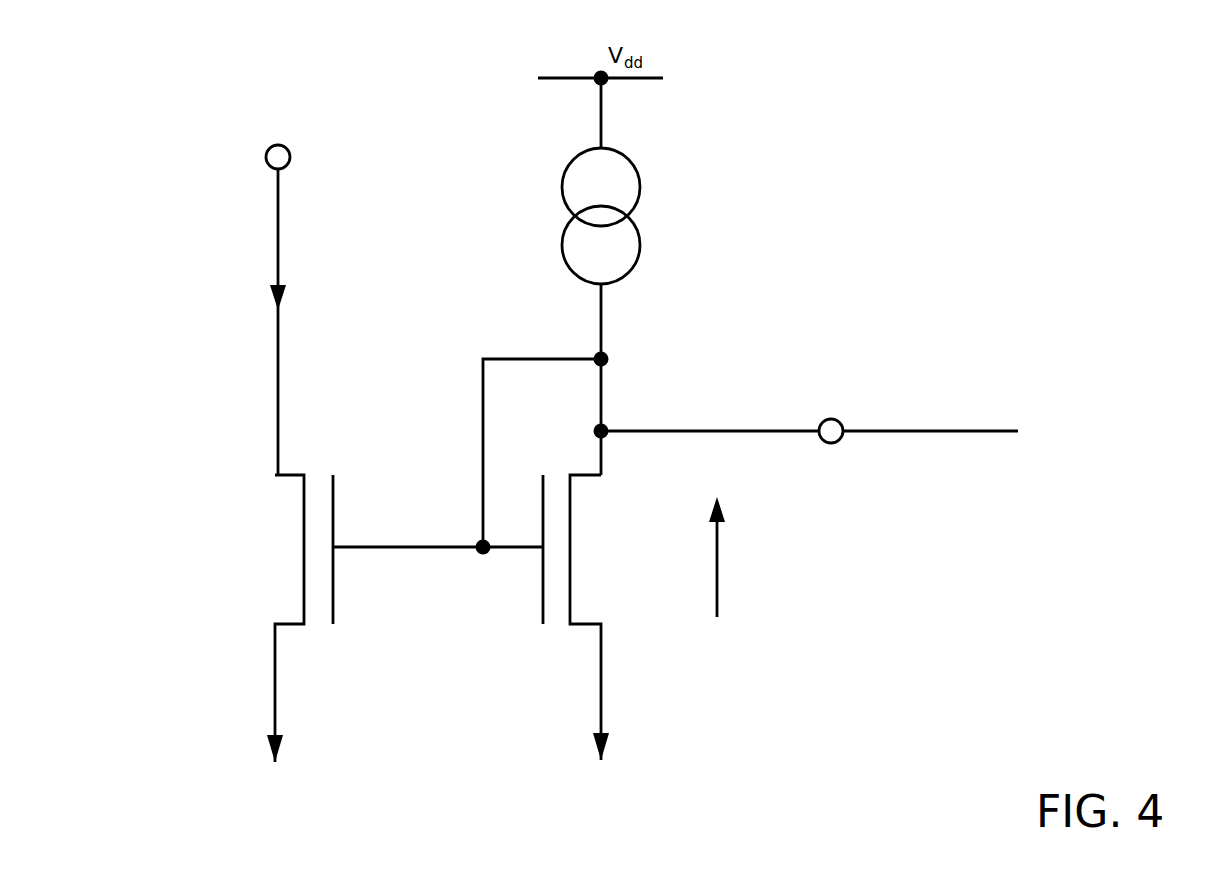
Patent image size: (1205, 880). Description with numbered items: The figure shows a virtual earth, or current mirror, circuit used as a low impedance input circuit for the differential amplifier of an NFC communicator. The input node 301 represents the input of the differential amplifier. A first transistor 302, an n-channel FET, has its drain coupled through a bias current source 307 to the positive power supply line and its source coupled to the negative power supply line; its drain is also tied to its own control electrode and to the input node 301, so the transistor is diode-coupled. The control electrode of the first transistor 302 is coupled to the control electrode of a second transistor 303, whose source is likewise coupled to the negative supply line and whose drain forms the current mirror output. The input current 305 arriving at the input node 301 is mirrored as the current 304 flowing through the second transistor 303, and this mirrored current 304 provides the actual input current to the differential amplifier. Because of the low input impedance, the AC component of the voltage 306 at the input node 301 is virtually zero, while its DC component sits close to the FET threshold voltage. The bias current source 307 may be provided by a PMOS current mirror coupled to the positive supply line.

The input node 301 is at (831, 419).
The first transistor 302 is at (544, 588).
The second transistor 303 is at (335, 590).
The mirrored input current 304 is at (295, 287).
The input current 305 is at (809, 453).
The voltage at the amplifier input 306 is at (746, 557).
The bias current source 307 is at (640, 257).